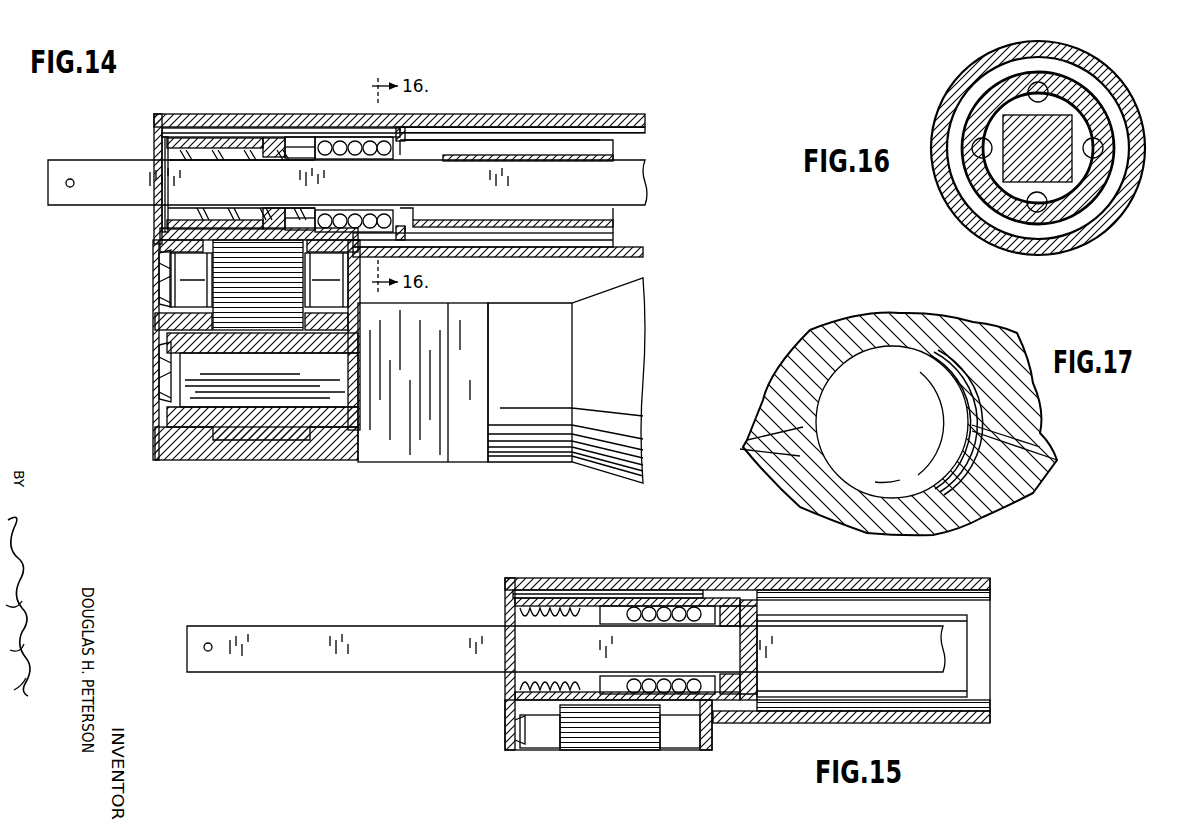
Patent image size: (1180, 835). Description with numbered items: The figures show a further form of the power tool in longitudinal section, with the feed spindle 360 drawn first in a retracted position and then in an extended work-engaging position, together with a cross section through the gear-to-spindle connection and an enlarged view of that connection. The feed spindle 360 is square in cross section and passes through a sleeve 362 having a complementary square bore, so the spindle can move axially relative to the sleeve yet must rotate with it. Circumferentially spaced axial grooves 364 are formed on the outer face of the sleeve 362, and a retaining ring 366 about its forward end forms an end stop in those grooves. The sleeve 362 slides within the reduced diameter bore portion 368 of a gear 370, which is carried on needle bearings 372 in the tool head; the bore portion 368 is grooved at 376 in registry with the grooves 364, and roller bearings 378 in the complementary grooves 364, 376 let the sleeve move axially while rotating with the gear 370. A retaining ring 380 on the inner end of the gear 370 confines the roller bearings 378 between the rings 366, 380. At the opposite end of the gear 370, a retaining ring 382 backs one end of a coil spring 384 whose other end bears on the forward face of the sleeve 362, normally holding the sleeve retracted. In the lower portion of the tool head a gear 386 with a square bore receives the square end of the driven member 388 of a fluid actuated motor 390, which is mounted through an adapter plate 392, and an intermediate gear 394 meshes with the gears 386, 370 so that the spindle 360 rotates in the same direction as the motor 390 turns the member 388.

In FIG. 14, the feed spindle 360 is at (92, 170).
In FIG. 15, the feed spindle 360 is at (418, 638).
In FIG. 16, the feed spindle 360 is at (1053, 157).
In FIG. 14, the sleeve 362 is at (440, 160).
In FIG. 15, the sleeve 362 is at (702, 674).
In FIG. 16, the grooves 364 is at (1013, 110).
In FIG. 17, the grooves 364 is at (800, 425).
In FIG. 14, the retaining ring 366 is at (317, 150).
In FIG. 14, the reduced diameter bore portion 368 is at (275, 150).
In FIG. 14, the gear 370 is at (230, 138).
In FIG. 15, the gear 370 is at (543, 598).
In FIG. 14, the needle bearings 372 is at (180, 117).
In FIG. 14, the grooves 376 is at (293, 147).
In FIG. 17, the grooves 376 is at (827, 380).
In FIG. 15, the roller bearings 378 is at (632, 608).
In FIG. 16, the roller bearings 378 is at (1045, 92).
In FIG. 17, the roller bearings 378 is at (854, 428).
In FIG. 14, the retaining ring 380 is at (401, 126).
In FIG. 14, the retaining ring 382 is at (160, 148).
In FIG. 14, the coil spring 384 is at (238, 216).
In FIG. 14, the gear 386 is at (253, 345).
In FIG. 14, the driven member 388 is at (280, 393).
In FIG. 14, the fluid actuated motor 390 is at (527, 460).
In FIG. 14, the adapter plate 392 is at (413, 463).
In FIG. 14, the intermediate gear 394 is at (180, 270).